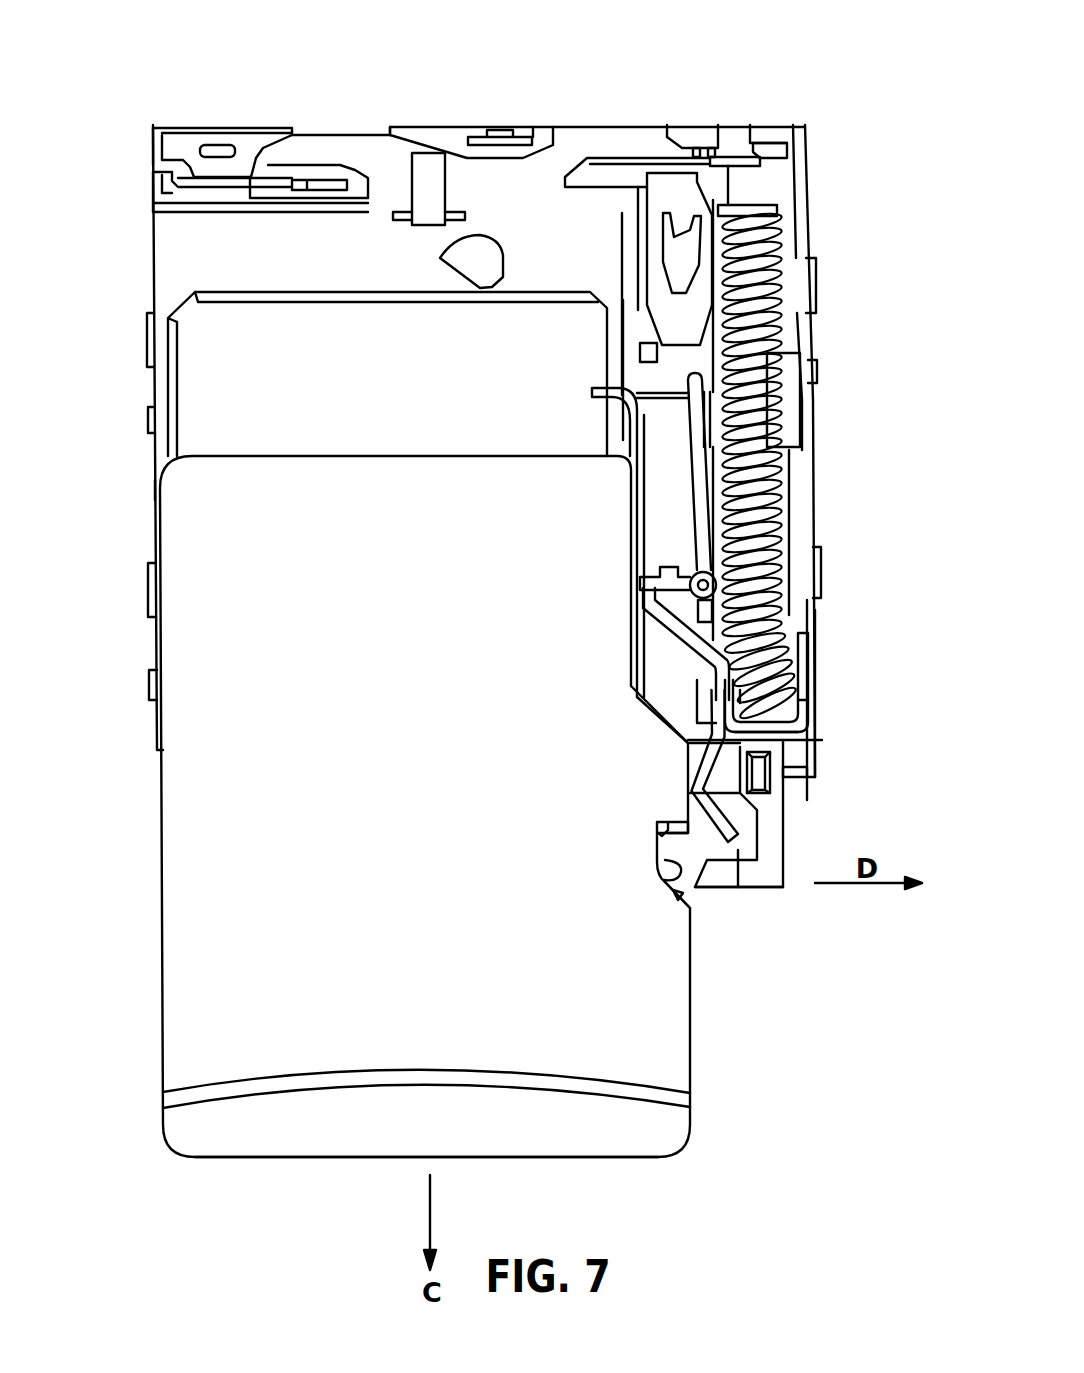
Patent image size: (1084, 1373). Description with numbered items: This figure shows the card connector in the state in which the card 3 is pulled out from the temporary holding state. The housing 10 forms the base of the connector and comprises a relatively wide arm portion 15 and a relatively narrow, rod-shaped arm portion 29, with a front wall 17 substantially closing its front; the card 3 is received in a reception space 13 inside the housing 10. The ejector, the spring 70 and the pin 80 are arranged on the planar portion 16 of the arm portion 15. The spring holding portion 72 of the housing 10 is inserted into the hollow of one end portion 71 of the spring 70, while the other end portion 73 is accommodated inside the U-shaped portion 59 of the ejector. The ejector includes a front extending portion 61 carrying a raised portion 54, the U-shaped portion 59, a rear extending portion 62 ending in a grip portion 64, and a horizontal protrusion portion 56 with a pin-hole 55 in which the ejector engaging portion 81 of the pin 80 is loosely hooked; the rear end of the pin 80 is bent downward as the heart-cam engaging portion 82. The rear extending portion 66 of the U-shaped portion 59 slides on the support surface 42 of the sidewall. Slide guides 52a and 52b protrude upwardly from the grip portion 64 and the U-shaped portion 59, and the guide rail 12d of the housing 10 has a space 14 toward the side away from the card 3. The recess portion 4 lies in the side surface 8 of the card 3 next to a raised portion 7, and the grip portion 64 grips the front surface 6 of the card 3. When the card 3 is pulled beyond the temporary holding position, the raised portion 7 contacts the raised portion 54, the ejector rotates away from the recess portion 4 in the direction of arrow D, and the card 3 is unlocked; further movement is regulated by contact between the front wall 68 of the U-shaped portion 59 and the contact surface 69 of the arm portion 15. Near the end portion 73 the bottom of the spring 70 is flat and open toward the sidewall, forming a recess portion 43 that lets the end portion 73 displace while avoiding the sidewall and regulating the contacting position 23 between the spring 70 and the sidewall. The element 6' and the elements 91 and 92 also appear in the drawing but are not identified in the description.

The card 3 is at (180, 910).
The recess portion 4 is at (667, 880).
The front surface 6 is at (425, 761).
The liquid pack upper wall 6' is at (581, 419).
The raised portion 7 is at (680, 762).
The side surface 8 is at (707, 990).
The housing 10 is at (809, 665).
The guide rail 12d is at (693, 653).
The reception space 13 is at (232, 356).
The space 14 is at (778, 773).
The arm portion 15 is at (738, 850).
The planar portion 16 is at (818, 301).
The front wall 17 is at (219, 122).
The contacting position 23 is at (816, 615).
The arm portion 29 is at (152, 490).
The support surface 42 is at (795, 524).
The recess portion 43 is at (815, 760).
The slide guide 52a is at (592, 388).
The slide guide 52b is at (738, 702).
The raised portion 54 is at (690, 790).
The pin-hole 55 is at (690, 582).
The horizontal protrusion portion 56 is at (670, 570).
The U-shaped portion 59 is at (812, 722).
The front extending portion 61 is at (733, 836).
The rear extending portion 62 is at (628, 473).
The grip portion 64 is at (623, 390).
The rear extending portion 66 is at (806, 656).
The front wall 68 is at (784, 767).
The contact surface 69 is at (770, 760).
The spring 70 is at (772, 330).
The one end portion 71 is at (760, 222).
The spring holding portion 72 is at (745, 205).
The other end portion 73 is at (808, 706).
The pin 80 is at (692, 436).
The ejector engaging portion 81 is at (708, 551).
The heart-cam engaging portion 82 is at (772, 362).
The positioning projection 91 is at (667, 893).
The locking tab 92 is at (663, 833).